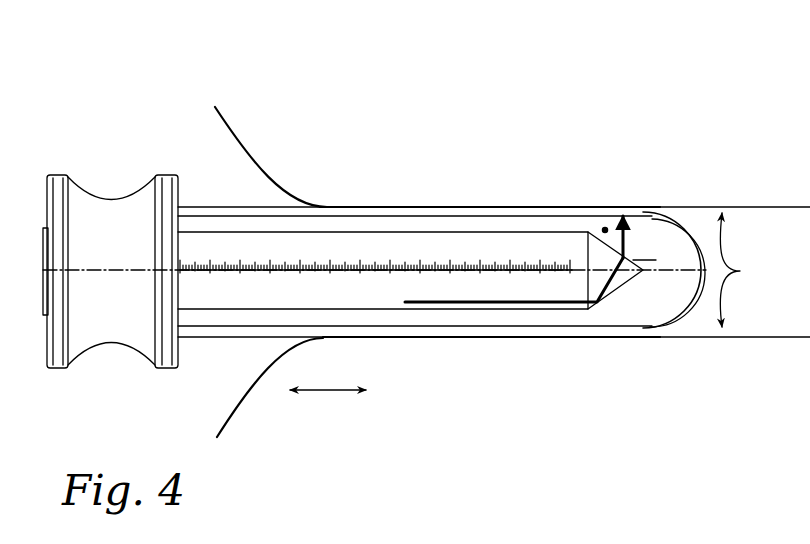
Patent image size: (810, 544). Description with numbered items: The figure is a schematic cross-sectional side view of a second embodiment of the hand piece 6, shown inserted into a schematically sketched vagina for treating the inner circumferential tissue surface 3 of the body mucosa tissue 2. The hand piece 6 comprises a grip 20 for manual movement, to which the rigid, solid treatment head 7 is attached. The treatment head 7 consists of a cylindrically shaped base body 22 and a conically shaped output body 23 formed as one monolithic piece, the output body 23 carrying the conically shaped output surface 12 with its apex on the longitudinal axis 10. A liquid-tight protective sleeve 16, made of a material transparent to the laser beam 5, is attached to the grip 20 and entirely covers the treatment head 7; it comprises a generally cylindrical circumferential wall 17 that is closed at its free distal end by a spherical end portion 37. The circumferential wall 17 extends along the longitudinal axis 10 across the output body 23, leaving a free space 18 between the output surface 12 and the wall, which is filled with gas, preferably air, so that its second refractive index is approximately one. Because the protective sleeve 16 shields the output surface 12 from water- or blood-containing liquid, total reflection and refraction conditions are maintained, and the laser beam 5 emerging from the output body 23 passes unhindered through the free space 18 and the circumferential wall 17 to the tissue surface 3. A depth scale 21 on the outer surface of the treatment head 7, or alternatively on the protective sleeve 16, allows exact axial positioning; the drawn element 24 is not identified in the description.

The body mucosa tissue 2 is at (741, 196).
The inner circumferential tissue surface 3 is at (740, 271).
The laser beam 5 is at (628, 234).
The hand piece 6 is at (202, 153).
The treatment head 7 is at (510, 228).
The longitudinal axis 10 is at (98, 272).
The conically shaped output surface 12 is at (615, 298).
The liquid-tight protective sleeve 16 is at (270, 203).
The circumferential wall 17 is at (472, 210).
The free space 18 is at (603, 228).
The grip 20 is at (104, 222).
The depth scale 21 is at (343, 263).
The base body 22 is at (430, 253).
The output body 23 is at (630, 296).
The axial displacement 24 is at (335, 392).
The spherical end portion 37 is at (693, 300).